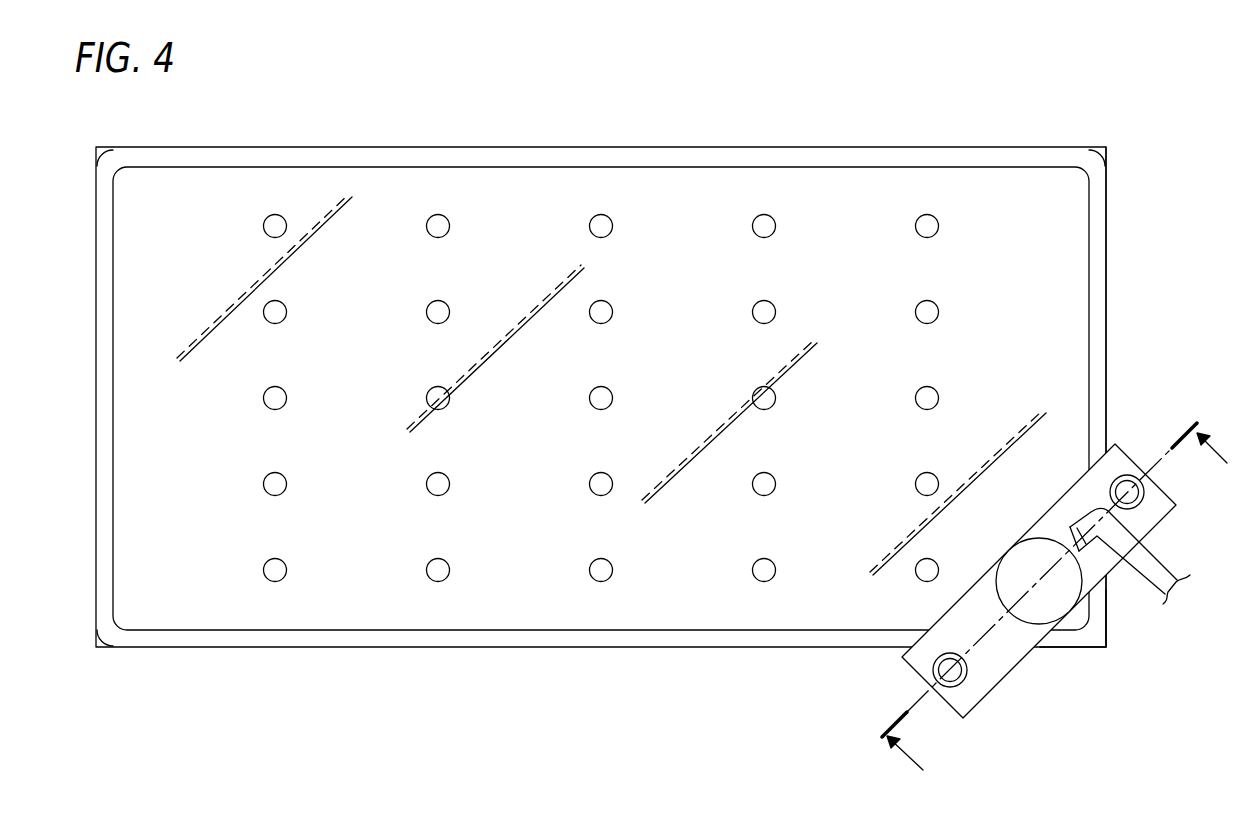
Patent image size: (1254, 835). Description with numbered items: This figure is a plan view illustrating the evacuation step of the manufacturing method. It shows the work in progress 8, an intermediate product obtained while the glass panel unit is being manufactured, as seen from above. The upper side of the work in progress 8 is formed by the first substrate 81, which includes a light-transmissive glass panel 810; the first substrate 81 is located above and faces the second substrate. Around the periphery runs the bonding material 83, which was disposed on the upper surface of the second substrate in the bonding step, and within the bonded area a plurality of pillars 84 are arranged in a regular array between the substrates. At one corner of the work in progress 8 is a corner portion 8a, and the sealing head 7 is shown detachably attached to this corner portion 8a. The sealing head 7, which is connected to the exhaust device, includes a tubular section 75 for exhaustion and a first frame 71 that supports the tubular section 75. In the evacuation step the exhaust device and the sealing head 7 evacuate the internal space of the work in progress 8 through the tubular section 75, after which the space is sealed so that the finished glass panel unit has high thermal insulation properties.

The work in progress 8 is at (818, 147).
The first substrate 81 is at (213, 195).
The glass panel 810 is at (380, 218).
The bonding material 83 is at (1097, 312).
The pillars 84 is at (441, 227).
The corner portion 8a is at (1100, 612).
The sealing head 7 is at (1064, 599).
The first frame 71 is at (1007, 663).
The tubular section 75 is at (1022, 563).